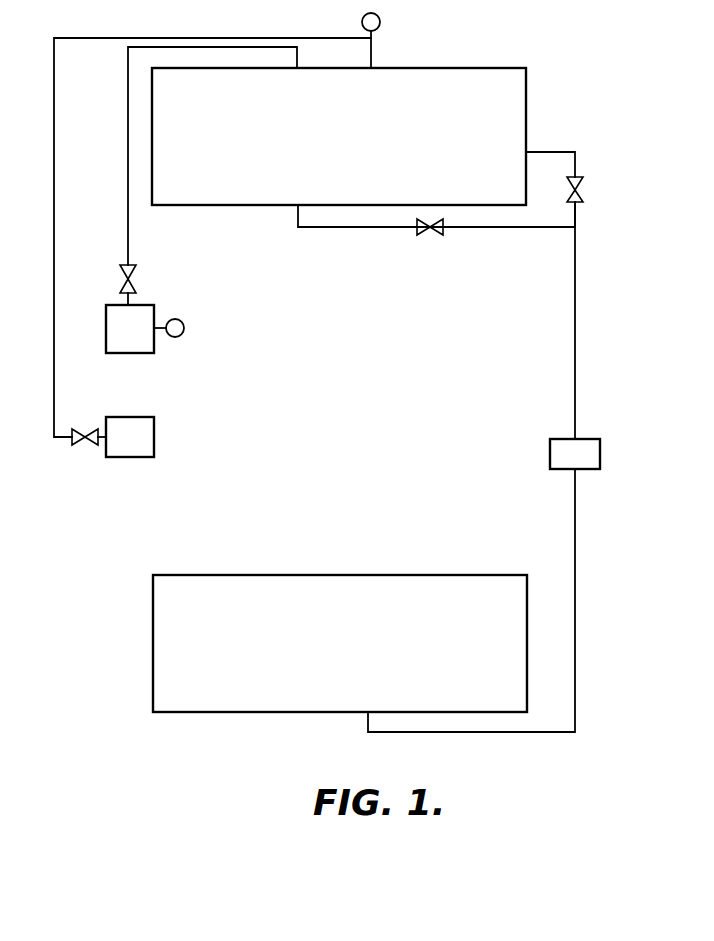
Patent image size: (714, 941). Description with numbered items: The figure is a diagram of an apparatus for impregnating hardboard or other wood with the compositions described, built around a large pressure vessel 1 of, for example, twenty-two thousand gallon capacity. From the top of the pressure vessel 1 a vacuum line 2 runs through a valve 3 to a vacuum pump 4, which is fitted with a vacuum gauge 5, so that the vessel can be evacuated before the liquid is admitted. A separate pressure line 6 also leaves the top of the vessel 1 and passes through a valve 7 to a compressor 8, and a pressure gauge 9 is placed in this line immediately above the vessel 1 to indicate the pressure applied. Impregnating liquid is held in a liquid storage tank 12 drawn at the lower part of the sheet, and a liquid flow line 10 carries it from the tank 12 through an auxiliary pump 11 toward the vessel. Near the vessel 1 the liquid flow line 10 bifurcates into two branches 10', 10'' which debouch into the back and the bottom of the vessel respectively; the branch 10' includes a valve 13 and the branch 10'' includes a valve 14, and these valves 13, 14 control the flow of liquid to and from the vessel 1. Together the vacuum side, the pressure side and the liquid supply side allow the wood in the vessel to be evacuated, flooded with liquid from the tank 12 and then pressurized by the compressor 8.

The pressure vessel 1 is at (350, 144).
The vacuum line 2 is at (128, 148).
The valve 3 is at (132, 264).
The vacuum pump 4 is at (120, 315).
The vacuum gauge 5 is at (177, 321).
The pressure line 6 is at (54, 161).
The valve 7 is at (86, 433).
The compressor 8 is at (143, 425).
The pressure gauge 9 is at (378, 14).
The liquid flow line 10 is at (471, 442).
The branch 10' is at (594, 222).
The branch 10'' is at (436, 236).
The auxiliary pump 11 is at (589, 450).
The liquid storage tank 12 is at (358, 646).
The valve 13 is at (575, 189).
The valve 14 is at (430, 235).